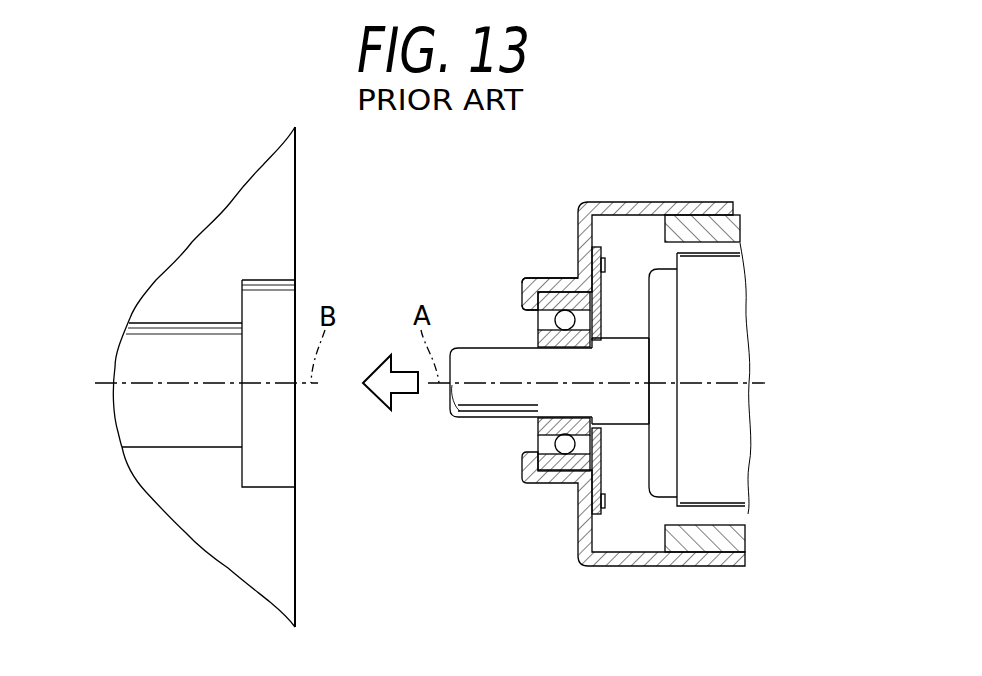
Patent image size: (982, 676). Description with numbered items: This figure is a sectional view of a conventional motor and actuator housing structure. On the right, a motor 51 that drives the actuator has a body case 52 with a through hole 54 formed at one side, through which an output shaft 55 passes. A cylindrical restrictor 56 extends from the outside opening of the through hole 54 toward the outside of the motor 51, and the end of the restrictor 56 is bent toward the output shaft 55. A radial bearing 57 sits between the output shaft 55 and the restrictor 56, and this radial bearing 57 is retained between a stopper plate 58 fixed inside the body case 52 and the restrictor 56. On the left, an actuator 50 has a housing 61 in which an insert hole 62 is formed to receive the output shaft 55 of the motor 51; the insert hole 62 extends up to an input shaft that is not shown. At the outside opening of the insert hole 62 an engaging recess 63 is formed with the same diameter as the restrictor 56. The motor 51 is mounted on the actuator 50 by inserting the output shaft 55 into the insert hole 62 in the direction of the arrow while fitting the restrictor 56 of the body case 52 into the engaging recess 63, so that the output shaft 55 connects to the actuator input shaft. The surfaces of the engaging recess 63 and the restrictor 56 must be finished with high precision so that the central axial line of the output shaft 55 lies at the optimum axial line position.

The actuator 50 is at (204, 377).
The housing 61 is at (270, 190).
The insert hole 62 is at (178, 323).
The engaging recess 63 is at (270, 290).
The motor 51 is at (600, 347).
The body case 52 is at (630, 203).
The through hole 54 is at (601, 480).
The output shaft 55 is at (490, 358).
The restrictor 56 is at (540, 278).
The radial bearing 57 is at (522, 429).
The stopper plate 58 is at (602, 305).